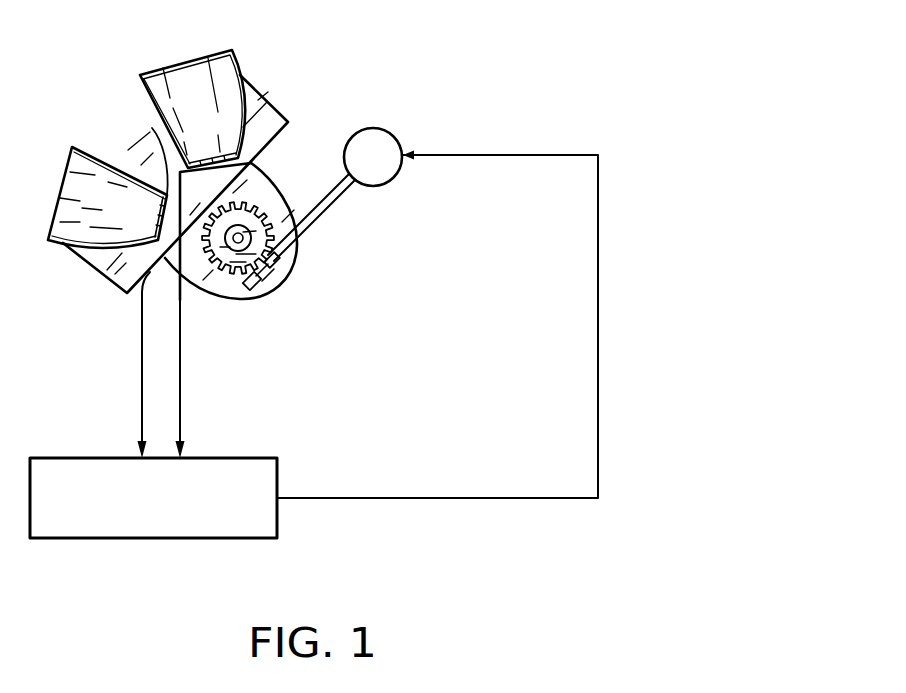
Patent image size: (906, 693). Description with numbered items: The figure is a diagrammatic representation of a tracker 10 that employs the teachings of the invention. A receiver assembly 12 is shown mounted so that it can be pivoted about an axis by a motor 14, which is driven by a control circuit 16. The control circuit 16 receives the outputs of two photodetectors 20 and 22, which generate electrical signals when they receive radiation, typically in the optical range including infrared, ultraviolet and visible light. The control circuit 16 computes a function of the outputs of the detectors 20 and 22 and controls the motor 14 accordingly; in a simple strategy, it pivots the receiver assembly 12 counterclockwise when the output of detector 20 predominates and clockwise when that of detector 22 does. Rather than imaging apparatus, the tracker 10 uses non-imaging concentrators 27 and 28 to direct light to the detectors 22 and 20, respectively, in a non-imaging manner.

The tracker 10 is at (494, 59).
The receiver assembly 12 is at (299, 99).
The motor 14 is at (393, 180).
The control circuit 16 is at (250, 457).
The photodetector 20 is at (153, 131).
The photodetector 22 is at (247, 162).
The non-imaging concentrator 27 is at (238, 64).
The non-imaging concentrator 28 is at (63, 248).